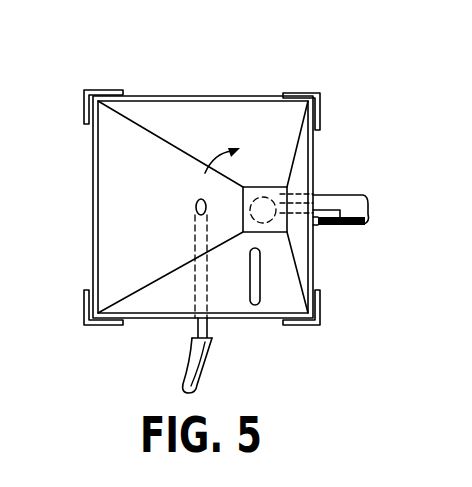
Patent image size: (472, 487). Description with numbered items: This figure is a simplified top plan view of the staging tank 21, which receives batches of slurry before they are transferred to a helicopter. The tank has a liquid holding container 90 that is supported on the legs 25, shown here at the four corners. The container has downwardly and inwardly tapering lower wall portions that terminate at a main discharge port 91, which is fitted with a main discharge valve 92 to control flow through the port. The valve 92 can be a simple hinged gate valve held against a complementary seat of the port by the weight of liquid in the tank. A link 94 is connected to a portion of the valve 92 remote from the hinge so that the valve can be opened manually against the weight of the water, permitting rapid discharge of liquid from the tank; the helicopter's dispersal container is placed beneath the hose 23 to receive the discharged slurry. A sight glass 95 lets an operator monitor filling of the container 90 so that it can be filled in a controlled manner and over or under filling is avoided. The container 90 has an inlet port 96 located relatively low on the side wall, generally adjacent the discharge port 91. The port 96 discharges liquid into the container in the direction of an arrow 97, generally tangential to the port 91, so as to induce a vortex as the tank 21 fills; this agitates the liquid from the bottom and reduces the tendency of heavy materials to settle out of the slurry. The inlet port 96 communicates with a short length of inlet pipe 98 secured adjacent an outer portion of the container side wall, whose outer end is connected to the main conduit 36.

The staging tank 21 is at (349, 98).
The hose 23 is at (341, 226).
The legs 25 is at (84, 109).
The main conduit 36 is at (213, 369).
The liquid holding container 90 is at (113, 211).
The main discharge port 91 is at (266, 192).
The main discharge valve 92 is at (248, 234).
The link 94 is at (328, 205).
The sight glass 95 is at (252, 307).
The inlet port 96 is at (195, 204).
The arrow 97 is at (203, 185).
The inlet pipe 98 is at (197, 333).